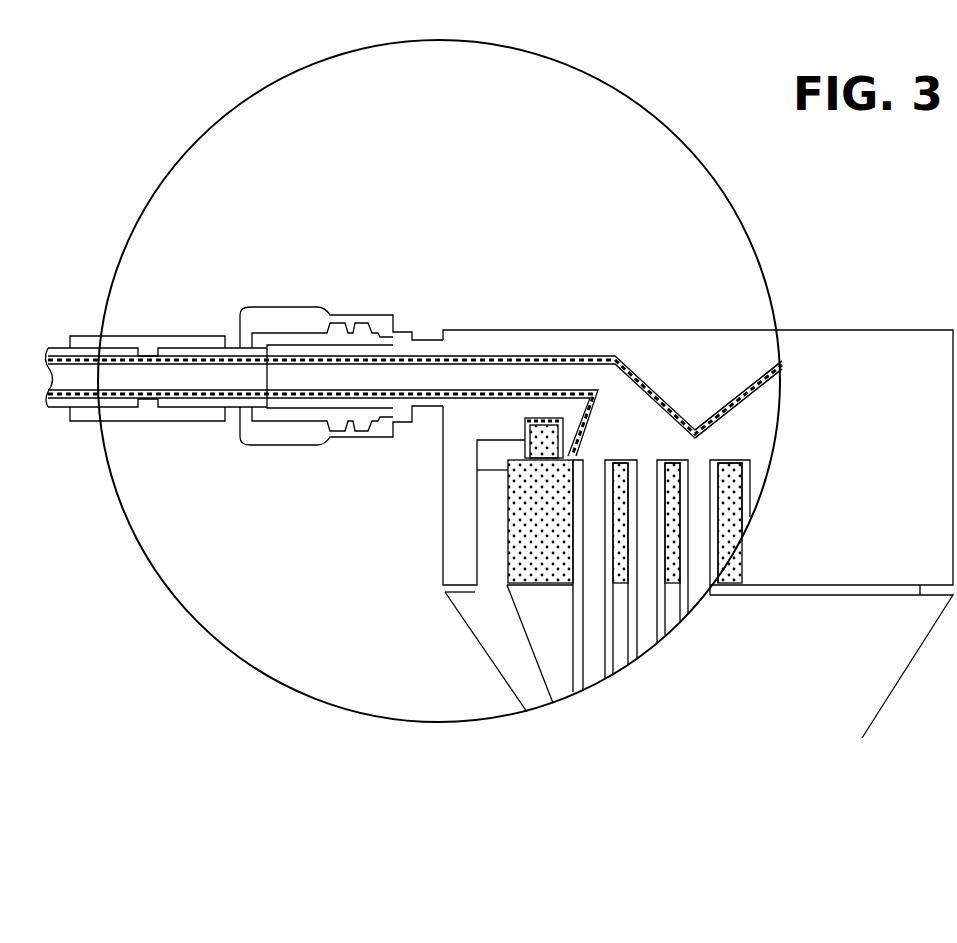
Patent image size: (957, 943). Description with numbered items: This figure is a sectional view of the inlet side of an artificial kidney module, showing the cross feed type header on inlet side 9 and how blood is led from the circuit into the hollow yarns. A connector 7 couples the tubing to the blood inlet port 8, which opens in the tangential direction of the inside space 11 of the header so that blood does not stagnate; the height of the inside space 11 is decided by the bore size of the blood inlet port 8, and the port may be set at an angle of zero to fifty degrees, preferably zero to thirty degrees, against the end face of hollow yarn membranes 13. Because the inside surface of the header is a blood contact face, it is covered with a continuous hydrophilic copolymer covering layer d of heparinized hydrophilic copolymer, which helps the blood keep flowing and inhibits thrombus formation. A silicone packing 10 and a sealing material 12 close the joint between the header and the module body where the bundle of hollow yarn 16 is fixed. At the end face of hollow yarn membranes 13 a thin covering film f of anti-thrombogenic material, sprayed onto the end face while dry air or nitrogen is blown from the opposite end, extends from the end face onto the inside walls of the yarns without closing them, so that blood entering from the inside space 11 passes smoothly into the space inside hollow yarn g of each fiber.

The connector 7 is at (260, 342).
The blood inlet port 8 is at (357, 380).
The hydrophilic copolymer covering layer d is at (512, 355).
The header on inlet side 9 is at (690, 358).
The inside space 11 is at (752, 415).
The end face of hollow yarn membranes 13 is at (733, 458).
The covering film f is at (753, 473).
The space inside hollow yarn g is at (592, 512).
The silicone packing 10 is at (540, 443).
The sealing material 12 is at (540, 520).
The hollow yarn 16 is at (603, 683).